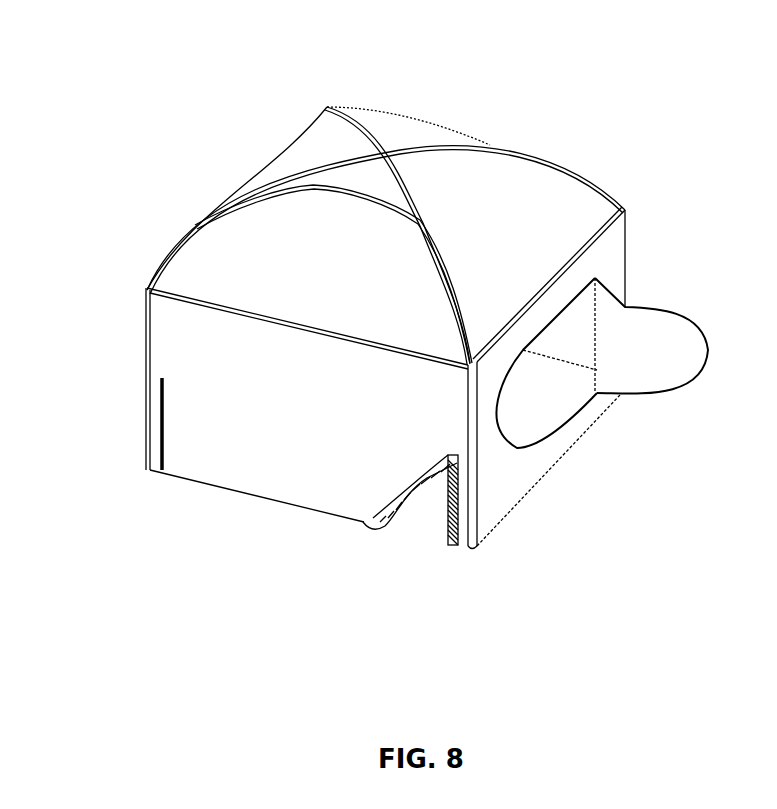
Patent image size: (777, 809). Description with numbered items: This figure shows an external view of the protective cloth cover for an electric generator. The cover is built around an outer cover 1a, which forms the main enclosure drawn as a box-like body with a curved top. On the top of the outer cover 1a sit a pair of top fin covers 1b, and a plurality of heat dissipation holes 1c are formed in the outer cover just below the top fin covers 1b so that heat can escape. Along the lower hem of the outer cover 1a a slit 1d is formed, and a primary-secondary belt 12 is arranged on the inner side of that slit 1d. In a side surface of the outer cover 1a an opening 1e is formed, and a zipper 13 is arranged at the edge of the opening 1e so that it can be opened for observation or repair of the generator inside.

The outer cover 1a is at (193, 263).
The top fin covers 1b is at (387, 123).
The heat dissipation holes 1c is at (337, 195).
The slit 1d is at (428, 513).
The opening 1e is at (533, 408).
The primary-secondary belt 12 is at (400, 475).
The zipper 13 is at (597, 280).